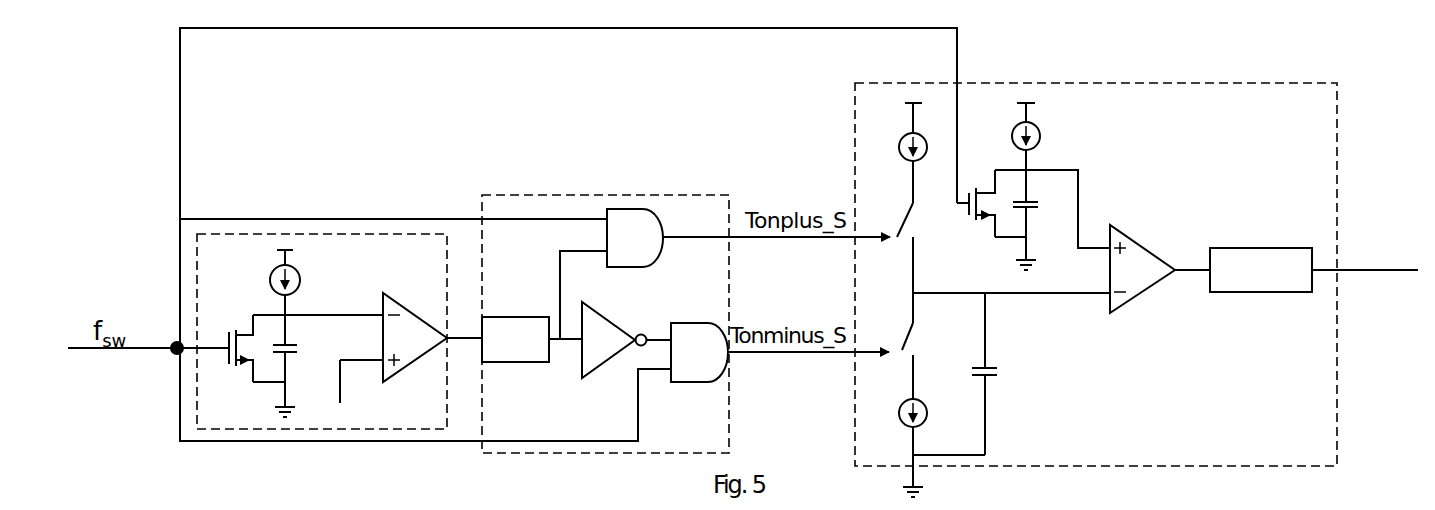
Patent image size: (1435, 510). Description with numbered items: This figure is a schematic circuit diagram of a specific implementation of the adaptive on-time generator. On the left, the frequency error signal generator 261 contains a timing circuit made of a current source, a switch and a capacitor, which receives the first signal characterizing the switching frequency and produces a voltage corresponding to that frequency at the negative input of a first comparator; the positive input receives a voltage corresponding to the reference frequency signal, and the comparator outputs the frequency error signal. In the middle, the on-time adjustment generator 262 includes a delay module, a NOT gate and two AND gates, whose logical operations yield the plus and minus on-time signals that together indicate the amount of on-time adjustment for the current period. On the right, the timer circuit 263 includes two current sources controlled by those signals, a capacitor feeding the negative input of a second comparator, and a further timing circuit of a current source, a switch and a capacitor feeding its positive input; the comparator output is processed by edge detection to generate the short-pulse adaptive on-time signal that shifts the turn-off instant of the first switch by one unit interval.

The frequency error signal generator 261 is at (336, 331).
The on-time adjustment generator 262 is at (588, 324).
The timer circuit 263 is at (1136, 290).